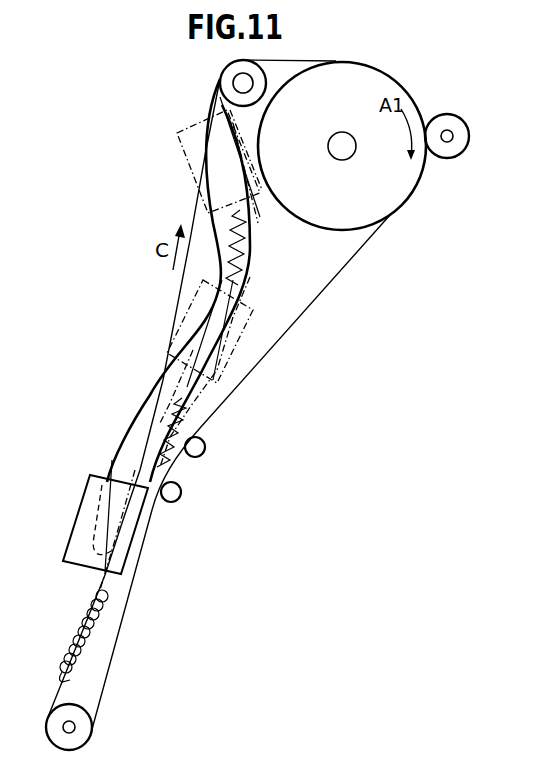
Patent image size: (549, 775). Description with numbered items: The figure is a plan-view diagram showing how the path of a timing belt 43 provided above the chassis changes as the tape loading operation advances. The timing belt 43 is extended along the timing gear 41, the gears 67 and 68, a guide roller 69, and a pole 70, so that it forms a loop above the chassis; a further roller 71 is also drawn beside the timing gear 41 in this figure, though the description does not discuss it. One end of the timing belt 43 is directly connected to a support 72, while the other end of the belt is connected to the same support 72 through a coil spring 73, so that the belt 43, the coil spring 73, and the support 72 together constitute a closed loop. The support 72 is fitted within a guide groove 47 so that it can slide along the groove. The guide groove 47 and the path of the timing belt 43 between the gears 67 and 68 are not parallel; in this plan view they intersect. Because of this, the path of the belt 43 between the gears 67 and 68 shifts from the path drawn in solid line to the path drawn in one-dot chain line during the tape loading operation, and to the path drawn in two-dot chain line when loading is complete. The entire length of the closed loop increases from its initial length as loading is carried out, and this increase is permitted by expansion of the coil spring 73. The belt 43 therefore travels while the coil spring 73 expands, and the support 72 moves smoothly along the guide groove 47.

The timing gear 41 is at (381, 77).
The timing belt 43 is at (327, 290).
The guide groove 47 is at (141, 405).
The gear 67 is at (222, 73).
The gear 68 is at (90, 727).
The guide roller 69 is at (182, 492).
The pole 70 is at (206, 447).
The pressure roller 71 is at (467, 128).
The support 72 is at (193, 178).
The coil spring 73 is at (228, 280).